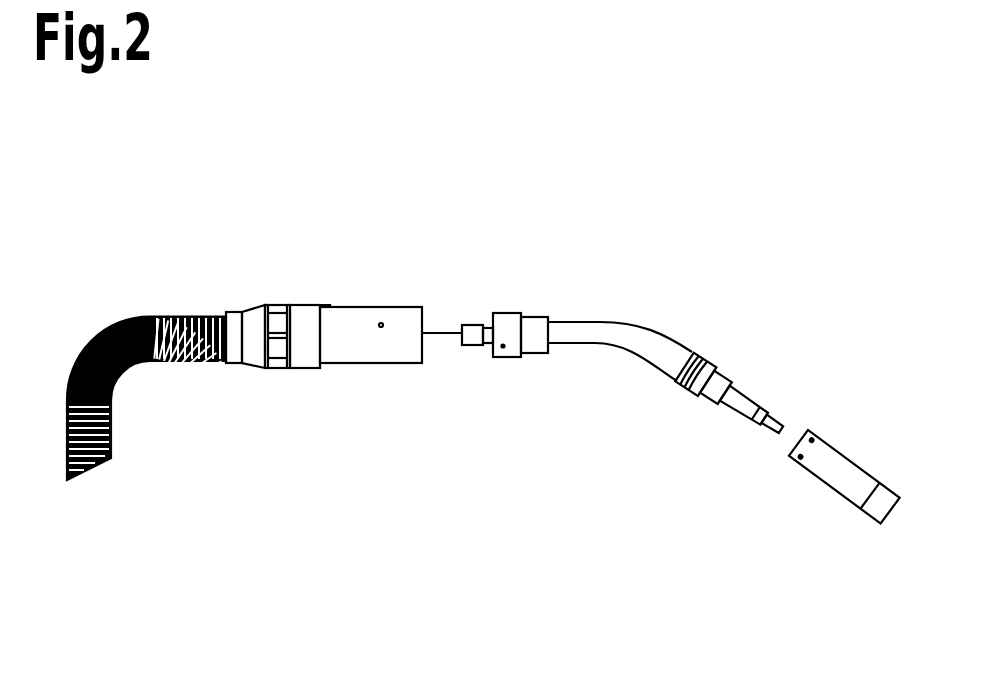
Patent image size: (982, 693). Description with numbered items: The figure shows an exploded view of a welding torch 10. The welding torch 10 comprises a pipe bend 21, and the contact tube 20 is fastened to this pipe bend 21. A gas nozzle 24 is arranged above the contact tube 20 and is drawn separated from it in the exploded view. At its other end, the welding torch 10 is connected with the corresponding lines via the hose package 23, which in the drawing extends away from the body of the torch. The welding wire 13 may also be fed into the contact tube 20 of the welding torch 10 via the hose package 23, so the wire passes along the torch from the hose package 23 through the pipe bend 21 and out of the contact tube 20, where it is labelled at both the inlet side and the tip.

The welding torch 10 is at (724, 231).
The welding wire 13 is at (442, 335).
The contact tube 20 is at (763, 425).
The pipe bend 21 is at (598, 338).
The hose package 23 is at (150, 312).
The gas nozzle 24 is at (833, 470).